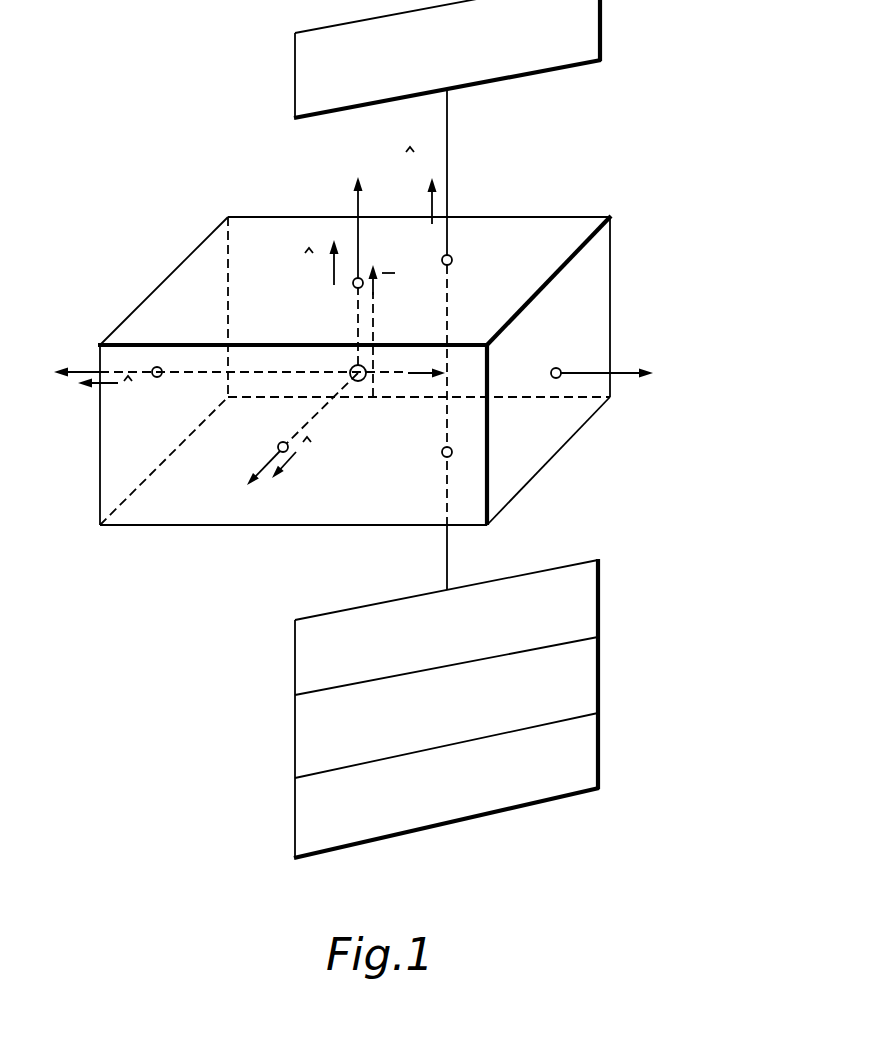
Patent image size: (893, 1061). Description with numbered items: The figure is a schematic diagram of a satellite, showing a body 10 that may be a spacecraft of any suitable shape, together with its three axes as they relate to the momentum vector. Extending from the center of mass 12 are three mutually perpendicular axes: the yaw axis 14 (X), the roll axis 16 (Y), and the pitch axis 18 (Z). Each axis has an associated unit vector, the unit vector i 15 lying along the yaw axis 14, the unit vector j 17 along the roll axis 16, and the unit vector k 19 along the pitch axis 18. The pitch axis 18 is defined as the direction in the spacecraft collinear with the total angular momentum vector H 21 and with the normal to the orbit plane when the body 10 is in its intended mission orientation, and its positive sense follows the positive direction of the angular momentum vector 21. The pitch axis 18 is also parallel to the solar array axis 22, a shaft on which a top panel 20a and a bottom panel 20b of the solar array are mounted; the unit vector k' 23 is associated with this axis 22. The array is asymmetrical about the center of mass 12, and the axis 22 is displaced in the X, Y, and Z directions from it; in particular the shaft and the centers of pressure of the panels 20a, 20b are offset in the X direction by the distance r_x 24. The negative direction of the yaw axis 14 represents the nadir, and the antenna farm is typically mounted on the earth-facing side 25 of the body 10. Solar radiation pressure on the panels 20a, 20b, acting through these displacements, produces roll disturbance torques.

The body 10 is at (376, 348).
The center of mass 12 is at (362, 382).
The yaw axis 14 is at (78, 370).
The unit vector i 15 is at (96, 386).
The roll axis 16 is at (262, 465).
The unit vector j 17 is at (290, 462).
The pitch axis 18 is at (360, 250).
The unit vector k 19 is at (333, 276).
The top panel of solar array 20a is at (603, 25).
The bottom panel of solar array 20b is at (603, 672).
The total angular momentum vector H 21 is at (376, 332).
The solar array axis 22 is at (449, 187).
The unit vector k' 23 is at (430, 206).
The distance r_x 24 is at (427, 380).
The side of spacecraft 25 is at (611, 300).